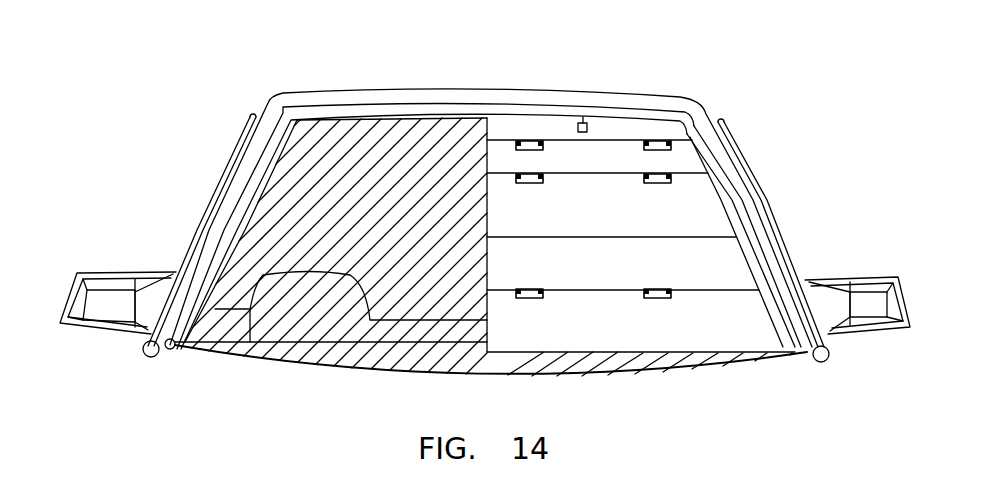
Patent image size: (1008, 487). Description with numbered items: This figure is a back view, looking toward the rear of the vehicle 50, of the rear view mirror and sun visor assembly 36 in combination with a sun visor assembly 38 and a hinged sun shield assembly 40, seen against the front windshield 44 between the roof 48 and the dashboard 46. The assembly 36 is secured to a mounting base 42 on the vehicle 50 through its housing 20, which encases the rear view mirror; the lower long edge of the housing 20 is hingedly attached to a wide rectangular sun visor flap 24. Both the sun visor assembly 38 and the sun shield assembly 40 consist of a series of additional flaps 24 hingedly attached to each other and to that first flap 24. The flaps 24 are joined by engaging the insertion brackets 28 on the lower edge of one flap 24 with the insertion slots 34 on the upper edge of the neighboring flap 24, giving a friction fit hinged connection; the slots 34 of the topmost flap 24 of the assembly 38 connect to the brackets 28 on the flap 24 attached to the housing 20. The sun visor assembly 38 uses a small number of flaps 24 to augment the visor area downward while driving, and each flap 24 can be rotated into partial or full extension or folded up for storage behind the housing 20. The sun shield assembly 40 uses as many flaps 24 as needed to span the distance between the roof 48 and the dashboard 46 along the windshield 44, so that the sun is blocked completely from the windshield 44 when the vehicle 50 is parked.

The housing 20 is at (657, 127).
The sun visor flap 24 is at (688, 161).
The insertion bracket 28 is at (534, 299).
The insertion slot 34 is at (519, 299).
The rear view mirror and sun visor assembly 36 is at (727, 145).
The sun visor assembly 38 is at (760, 205).
The sun shield assembly 40 is at (779, 254).
The mounting base 42 is at (579, 121).
The front windshield 44 is at (327, 220).
The dashboard 46 is at (424, 366).
The roof 48 is at (385, 92).
The vehicle 50 is at (486, 73).